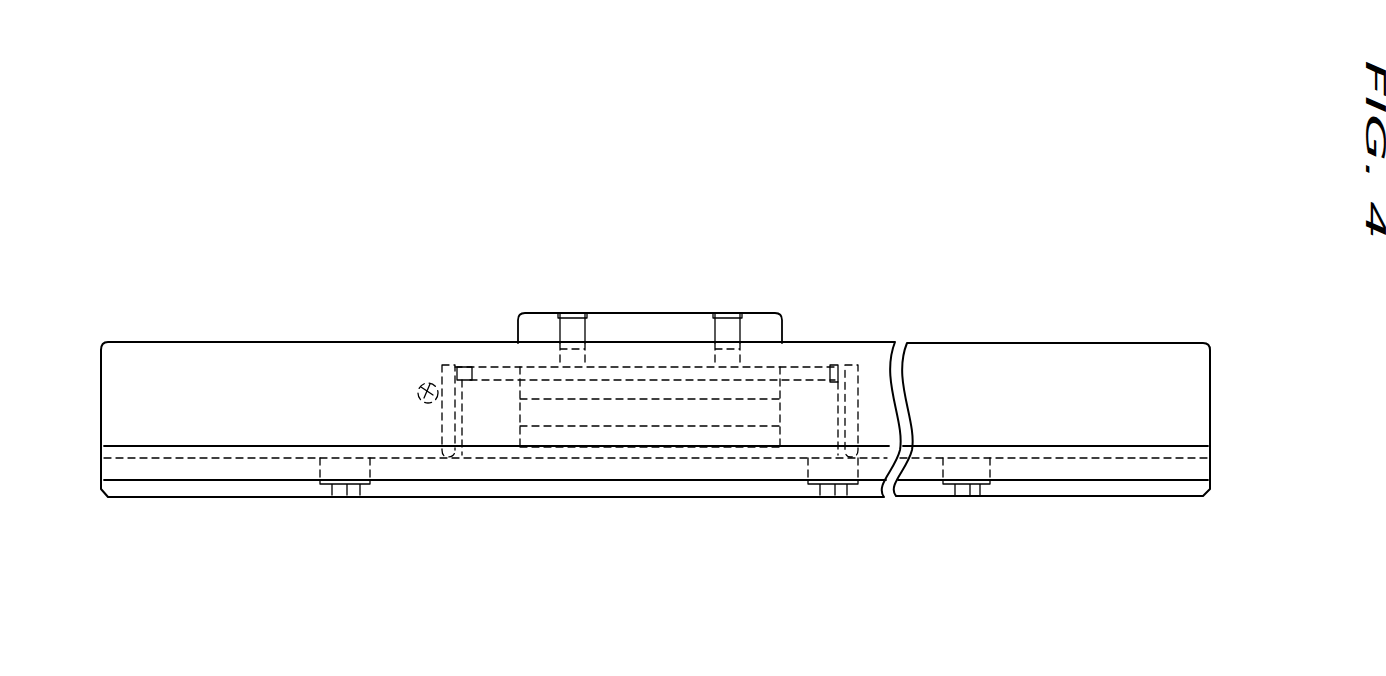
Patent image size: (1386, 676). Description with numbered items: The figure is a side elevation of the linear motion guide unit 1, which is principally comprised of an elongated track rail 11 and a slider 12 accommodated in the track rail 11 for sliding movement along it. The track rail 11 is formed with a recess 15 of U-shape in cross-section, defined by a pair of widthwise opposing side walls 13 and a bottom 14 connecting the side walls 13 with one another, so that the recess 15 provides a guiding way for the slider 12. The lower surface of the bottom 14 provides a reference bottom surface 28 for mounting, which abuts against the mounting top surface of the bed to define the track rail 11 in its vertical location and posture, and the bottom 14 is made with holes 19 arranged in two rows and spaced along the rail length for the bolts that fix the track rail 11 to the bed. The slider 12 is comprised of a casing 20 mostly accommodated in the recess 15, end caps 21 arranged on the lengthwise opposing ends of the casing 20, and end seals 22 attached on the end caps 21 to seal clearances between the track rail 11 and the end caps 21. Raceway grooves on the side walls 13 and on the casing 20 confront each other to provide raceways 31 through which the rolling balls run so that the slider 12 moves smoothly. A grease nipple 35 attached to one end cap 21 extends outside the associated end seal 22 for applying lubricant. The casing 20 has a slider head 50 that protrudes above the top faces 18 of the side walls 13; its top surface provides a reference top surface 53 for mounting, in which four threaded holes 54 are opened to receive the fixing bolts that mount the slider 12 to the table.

The linear motion guide unit 1 is at (785, 272).
The track rail 11 is at (418, 498).
The slider 12 is at (660, 305).
The side walls 13 is at (140, 392).
The bottom 14 is at (241, 460).
The recess 15 is at (288, 398).
The top faces 18 is at (202, 342).
The holes 19 is at (347, 482).
The casing 20 is at (522, 417).
The end caps 21 is at (496, 402).
The end seals 22 is at (450, 362).
The reference bottom surface 28 is at (157, 497).
The raceways 31 is at (703, 420).
The grease nipple 35 is at (425, 375).
The slider head 50 is at (630, 330).
The reference top surface 53 is at (682, 313).
The threaded holes 54 is at (575, 312).